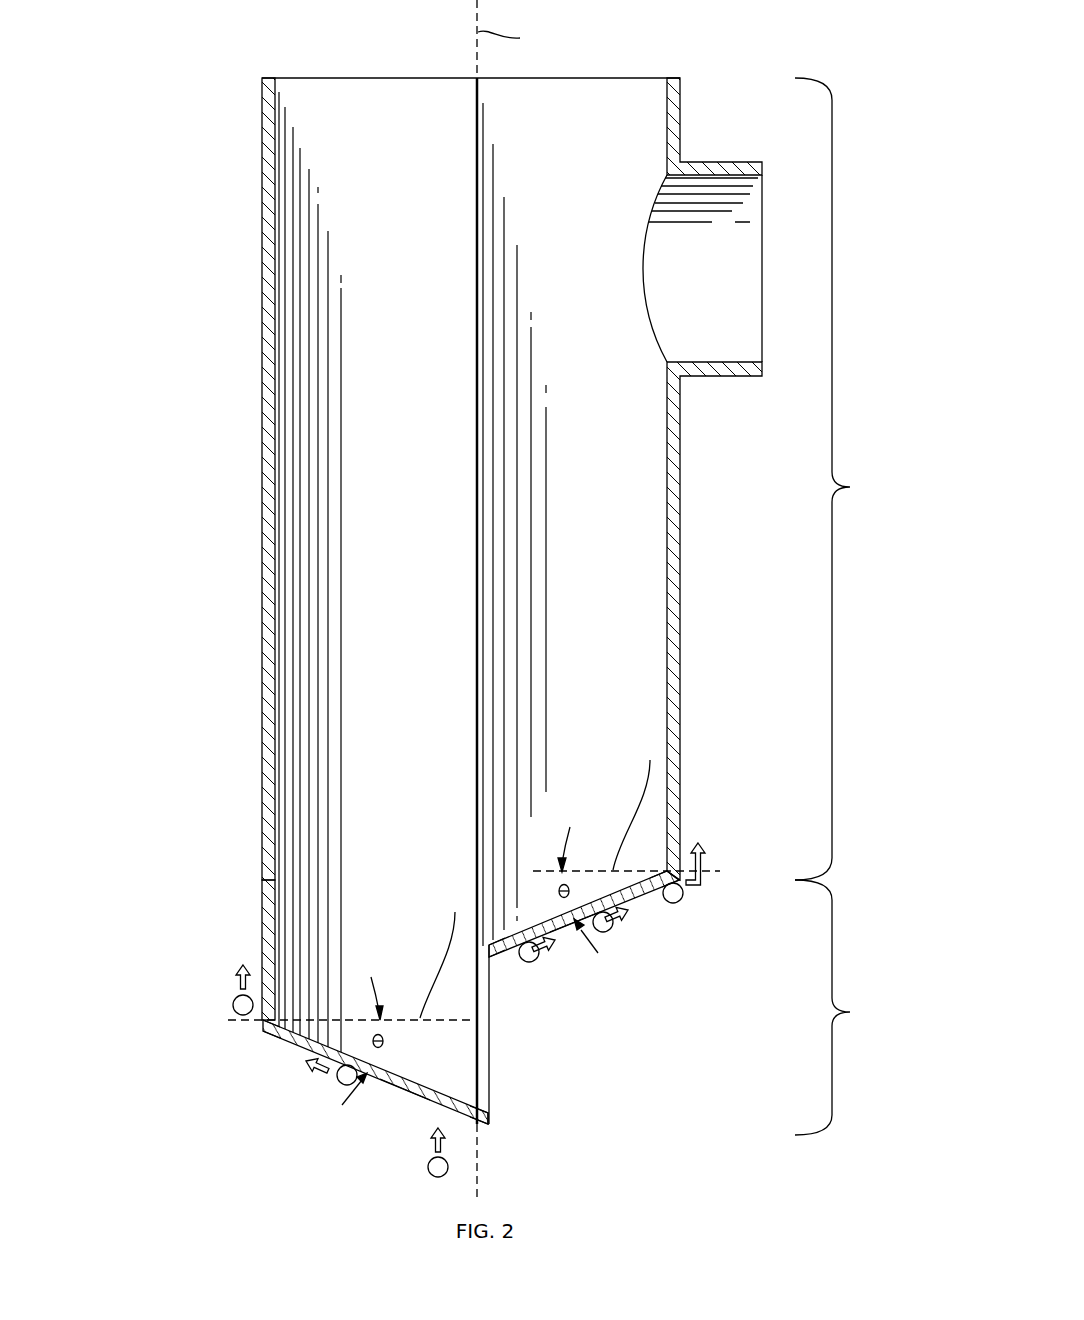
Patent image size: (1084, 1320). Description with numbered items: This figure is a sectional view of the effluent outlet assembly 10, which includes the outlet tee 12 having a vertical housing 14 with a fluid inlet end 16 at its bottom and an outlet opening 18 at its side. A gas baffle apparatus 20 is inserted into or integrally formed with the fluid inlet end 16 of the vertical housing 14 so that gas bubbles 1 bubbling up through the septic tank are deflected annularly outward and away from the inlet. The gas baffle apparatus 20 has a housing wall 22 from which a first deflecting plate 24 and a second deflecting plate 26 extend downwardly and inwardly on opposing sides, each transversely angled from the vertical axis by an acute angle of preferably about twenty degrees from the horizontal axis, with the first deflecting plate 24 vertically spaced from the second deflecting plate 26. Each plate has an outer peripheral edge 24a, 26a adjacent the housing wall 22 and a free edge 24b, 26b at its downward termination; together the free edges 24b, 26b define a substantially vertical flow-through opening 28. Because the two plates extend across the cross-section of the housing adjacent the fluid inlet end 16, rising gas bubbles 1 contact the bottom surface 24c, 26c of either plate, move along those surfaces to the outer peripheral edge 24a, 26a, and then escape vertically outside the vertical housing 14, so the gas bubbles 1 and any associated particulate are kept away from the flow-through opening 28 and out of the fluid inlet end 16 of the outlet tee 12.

The effluent outlet assembly 10 is at (150, 104).
The outlet tee 12 is at (852, 488).
The vertical housing 14 is at (262, 425).
The fluid inlet end 16 is at (400, 936).
The outlet opening 18 is at (636, 285).
The gas baffle apparatus 20 is at (852, 1012).
The housing wall 22 is at (268, 913).
The first deflecting plate 24 is at (541, 916).
The outer peripheral edge 24a is at (670, 903).
The free edge 24b is at (498, 958).
The bottom surface 24c is at (583, 932).
The second deflecting plate 26 is at (378, 1086).
The outer peripheral edge 26a is at (262, 1032).
The free edge 26b is at (490, 1115).
The bottom surface 26c is at (408, 1088).
The flow-through opening 28 is at (500, 1028).
The gas bubbles 1 is at (232, 1005).